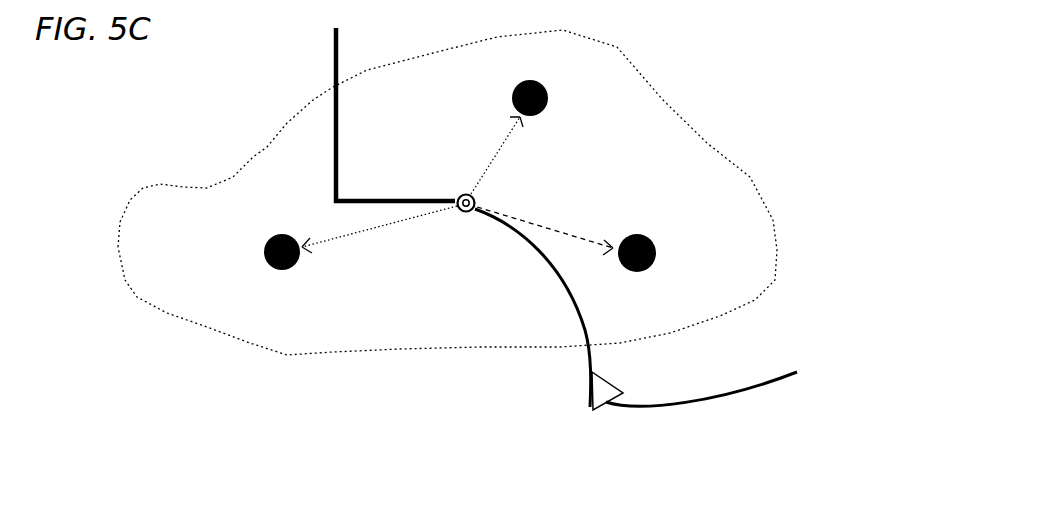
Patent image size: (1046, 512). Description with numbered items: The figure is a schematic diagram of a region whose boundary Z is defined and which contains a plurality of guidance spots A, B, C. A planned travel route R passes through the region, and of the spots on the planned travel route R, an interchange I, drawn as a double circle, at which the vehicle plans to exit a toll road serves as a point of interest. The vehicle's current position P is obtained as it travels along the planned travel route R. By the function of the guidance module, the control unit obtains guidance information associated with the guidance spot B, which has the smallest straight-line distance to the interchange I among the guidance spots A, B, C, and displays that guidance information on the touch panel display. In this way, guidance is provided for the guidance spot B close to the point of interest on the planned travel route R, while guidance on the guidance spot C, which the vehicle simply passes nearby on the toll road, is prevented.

The guidance spot A is at (360, 251).
The guidance spot B is at (509, 124).
The guidance spot C is at (586, 239).
The interchange I is at (478, 197).
The current position P is at (594, 376).
The planned travel route R is at (553, 267).
The boundary Z is at (785, 250).